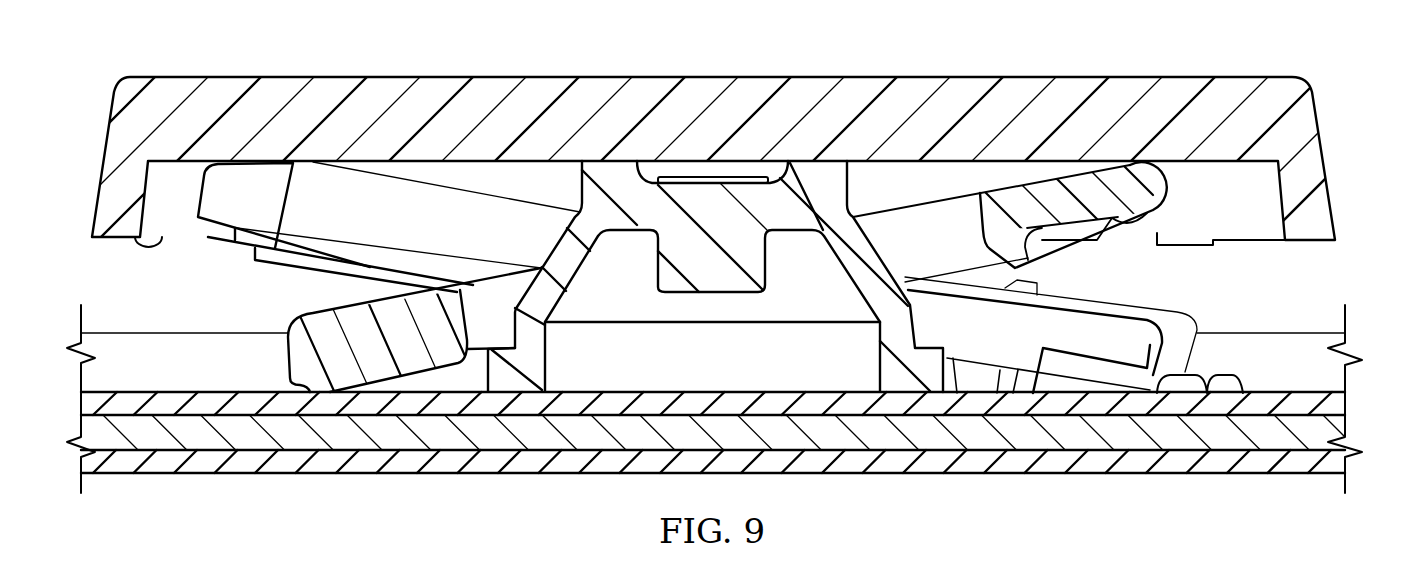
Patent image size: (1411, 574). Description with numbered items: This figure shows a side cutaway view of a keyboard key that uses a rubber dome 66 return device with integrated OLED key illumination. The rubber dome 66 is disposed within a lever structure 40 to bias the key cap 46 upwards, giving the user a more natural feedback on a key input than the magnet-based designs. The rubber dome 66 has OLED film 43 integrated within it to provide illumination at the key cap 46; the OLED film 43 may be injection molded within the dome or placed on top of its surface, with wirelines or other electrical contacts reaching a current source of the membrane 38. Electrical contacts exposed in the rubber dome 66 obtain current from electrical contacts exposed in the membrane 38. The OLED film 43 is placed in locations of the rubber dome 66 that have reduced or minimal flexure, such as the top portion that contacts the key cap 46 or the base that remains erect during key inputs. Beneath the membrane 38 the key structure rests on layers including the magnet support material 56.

The membrane 38 is at (613, 397).
The lever structure 40 is at (223, 203).
The OLED film 43 is at (690, 176).
The key cap 46 is at (1077, 90).
The magnet support material 56 is at (1223, 463).
The rubber dome 66 is at (890, 368).